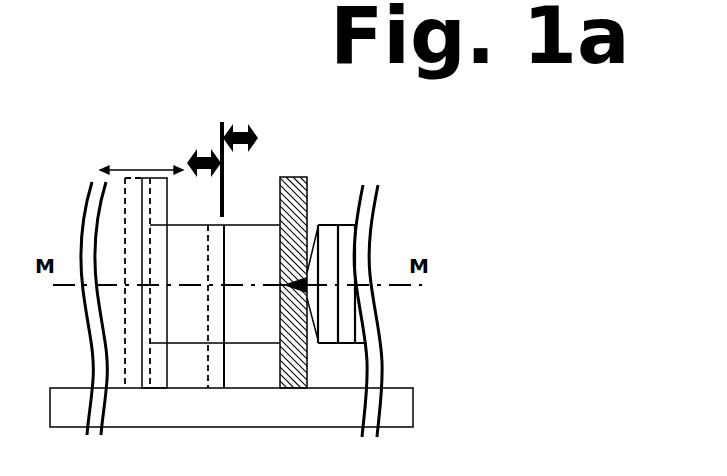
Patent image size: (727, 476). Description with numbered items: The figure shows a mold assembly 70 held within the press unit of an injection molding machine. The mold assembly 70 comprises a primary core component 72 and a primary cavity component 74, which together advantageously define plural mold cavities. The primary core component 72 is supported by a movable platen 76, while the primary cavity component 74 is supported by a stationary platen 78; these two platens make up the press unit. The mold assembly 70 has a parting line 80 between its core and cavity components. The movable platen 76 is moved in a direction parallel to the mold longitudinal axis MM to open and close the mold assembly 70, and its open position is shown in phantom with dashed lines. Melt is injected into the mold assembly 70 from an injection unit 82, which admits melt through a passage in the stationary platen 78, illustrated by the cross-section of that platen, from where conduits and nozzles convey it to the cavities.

The mold assembly 70 is at (245, 172).
The primary core component 72 is at (215, 323).
The primary cavity component 74 is at (237, 323).
The movable platen 76 is at (163, 182).
The stationary platen 78 is at (306, 188).
The parting line 80 is at (222, 122).
The injection unit 82 is at (347, 320).